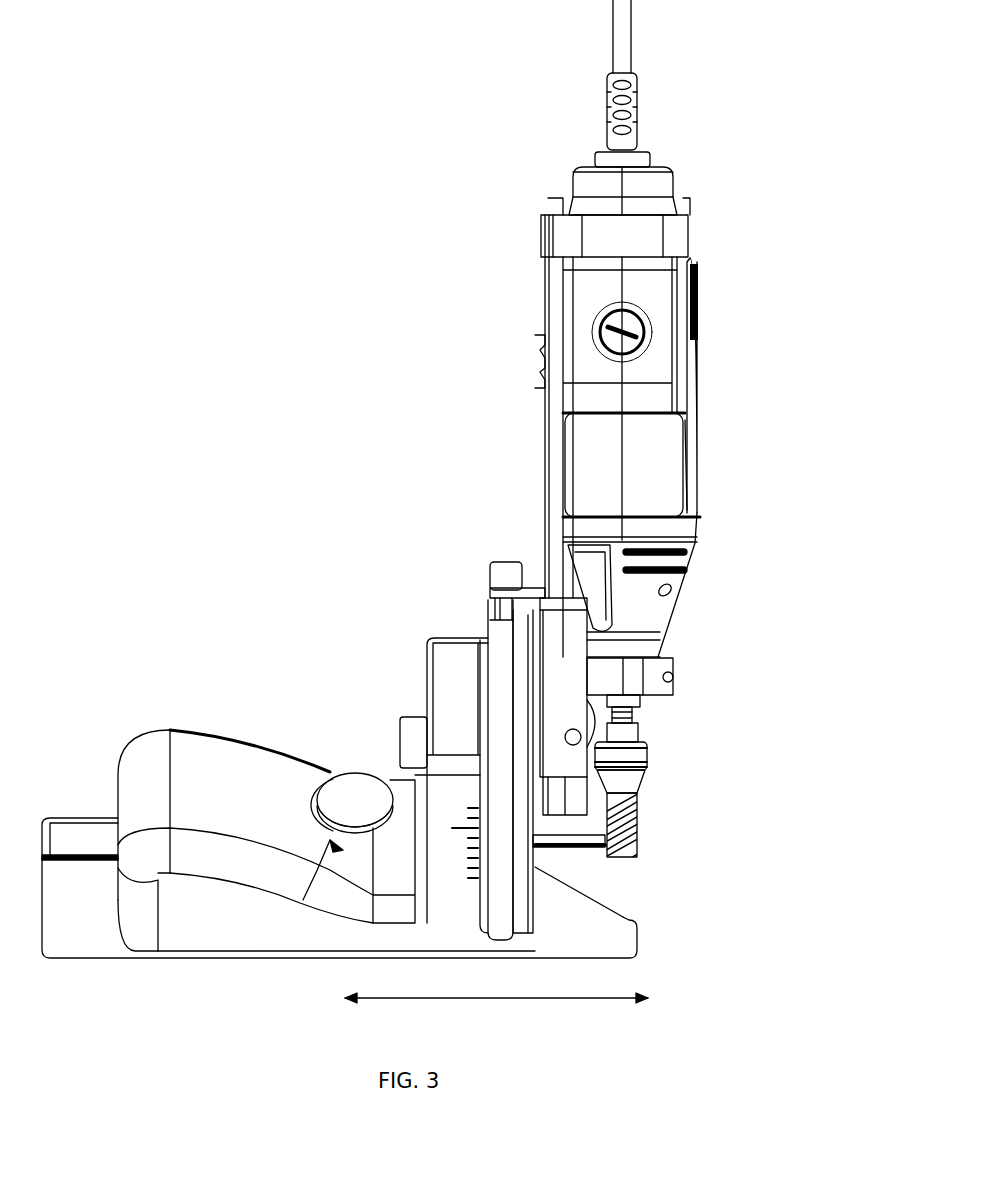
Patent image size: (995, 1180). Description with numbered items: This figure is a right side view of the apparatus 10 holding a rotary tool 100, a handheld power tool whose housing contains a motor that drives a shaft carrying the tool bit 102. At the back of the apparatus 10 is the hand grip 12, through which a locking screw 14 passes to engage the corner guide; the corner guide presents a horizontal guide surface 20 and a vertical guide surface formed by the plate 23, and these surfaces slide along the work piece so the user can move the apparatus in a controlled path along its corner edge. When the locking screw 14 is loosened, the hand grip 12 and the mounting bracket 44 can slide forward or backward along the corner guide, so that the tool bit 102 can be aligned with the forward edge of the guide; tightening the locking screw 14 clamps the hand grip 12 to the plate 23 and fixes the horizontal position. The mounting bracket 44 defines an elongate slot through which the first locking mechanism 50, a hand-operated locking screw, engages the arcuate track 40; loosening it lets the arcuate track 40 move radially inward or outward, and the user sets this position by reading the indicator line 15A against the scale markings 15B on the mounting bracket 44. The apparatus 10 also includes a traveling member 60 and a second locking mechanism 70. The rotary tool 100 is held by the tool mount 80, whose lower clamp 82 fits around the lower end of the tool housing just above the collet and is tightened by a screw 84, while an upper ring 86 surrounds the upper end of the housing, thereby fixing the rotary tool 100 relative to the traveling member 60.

The apparatus 10 is at (247, 572).
The hand grip 12 is at (190, 732).
The locking screw 14 is at (351, 774).
The indicator line 15A is at (452, 825).
The scale markings 15B is at (466, 877).
The horizontal guide surface 20 is at (557, 848).
The plate 23 is at (638, 933).
The arcuate track 40 is at (537, 893).
The mounting bracket 44 is at (440, 873).
The first locking mechanism 50 is at (400, 742).
The traveling member 60 is at (567, 706).
The second locking mechanism 70 is at (503, 561).
The tool mount 80 is at (569, 396).
The lower clamp 82 is at (650, 700).
The screw 84 is at (673, 677).
The upper ring 86 is at (695, 237).
The rotary tool 100 is at (575, 166).
The tool bit 102 is at (638, 848).